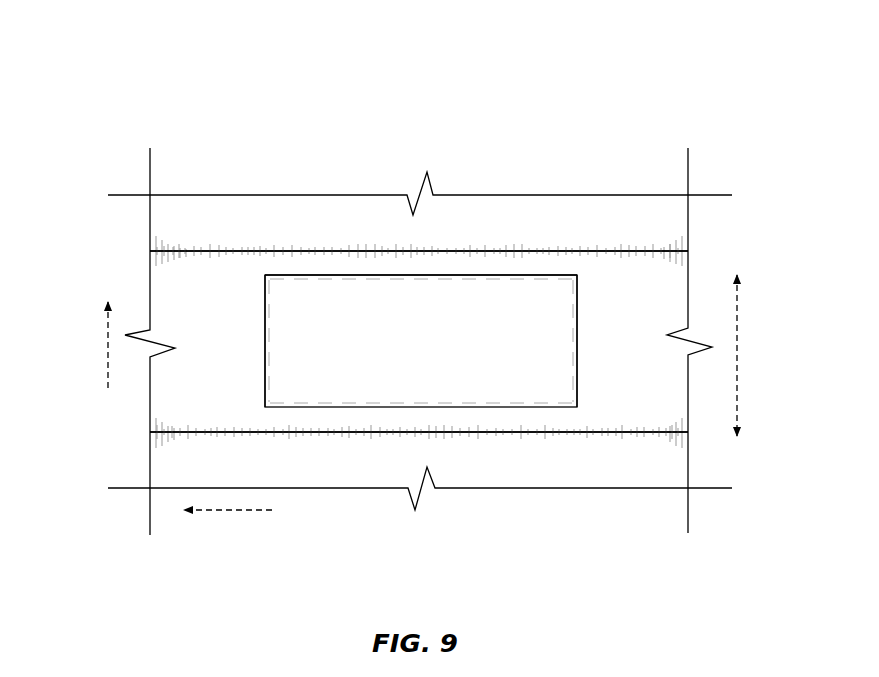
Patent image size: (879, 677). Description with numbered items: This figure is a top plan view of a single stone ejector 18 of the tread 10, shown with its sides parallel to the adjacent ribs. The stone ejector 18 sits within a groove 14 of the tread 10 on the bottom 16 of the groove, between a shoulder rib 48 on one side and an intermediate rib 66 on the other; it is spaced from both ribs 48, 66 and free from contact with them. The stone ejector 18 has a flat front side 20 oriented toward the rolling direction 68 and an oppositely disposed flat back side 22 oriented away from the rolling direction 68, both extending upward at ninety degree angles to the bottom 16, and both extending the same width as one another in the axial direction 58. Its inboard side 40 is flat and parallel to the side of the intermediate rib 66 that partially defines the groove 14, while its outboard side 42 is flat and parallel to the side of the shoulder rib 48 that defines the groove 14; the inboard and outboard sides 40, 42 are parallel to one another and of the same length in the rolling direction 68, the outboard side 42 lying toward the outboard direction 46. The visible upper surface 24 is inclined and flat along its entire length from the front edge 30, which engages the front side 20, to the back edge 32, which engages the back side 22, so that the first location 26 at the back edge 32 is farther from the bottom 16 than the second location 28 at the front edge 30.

The tread 10 is at (657, 130).
The groove 14 is at (170, 393).
The bottom 16 is at (612, 402).
The stone ejector 18 is at (437, 354).
The front side 20 is at (257, 383).
The back side 22 is at (586, 342).
The upper surface 24 is at (483, 389).
The first location 26 is at (493, 300).
The second location 28 is at (290, 300).
The front edge 30 is at (263, 343).
The back edge 32 is at (578, 290).
The inboard side 40 is at (348, 419).
The outboard side 42 is at (340, 266).
The outboard direction 46 is at (105, 348).
The shoulder rib 48 is at (200, 215).
The axial direction 58 is at (738, 357).
The intermediate rib 66 is at (548, 468).
The rolling direction 68 is at (230, 510).